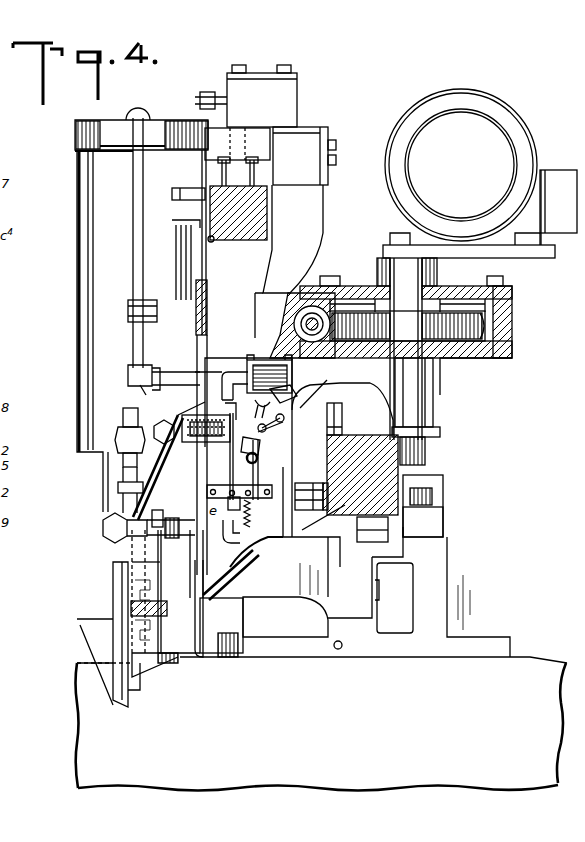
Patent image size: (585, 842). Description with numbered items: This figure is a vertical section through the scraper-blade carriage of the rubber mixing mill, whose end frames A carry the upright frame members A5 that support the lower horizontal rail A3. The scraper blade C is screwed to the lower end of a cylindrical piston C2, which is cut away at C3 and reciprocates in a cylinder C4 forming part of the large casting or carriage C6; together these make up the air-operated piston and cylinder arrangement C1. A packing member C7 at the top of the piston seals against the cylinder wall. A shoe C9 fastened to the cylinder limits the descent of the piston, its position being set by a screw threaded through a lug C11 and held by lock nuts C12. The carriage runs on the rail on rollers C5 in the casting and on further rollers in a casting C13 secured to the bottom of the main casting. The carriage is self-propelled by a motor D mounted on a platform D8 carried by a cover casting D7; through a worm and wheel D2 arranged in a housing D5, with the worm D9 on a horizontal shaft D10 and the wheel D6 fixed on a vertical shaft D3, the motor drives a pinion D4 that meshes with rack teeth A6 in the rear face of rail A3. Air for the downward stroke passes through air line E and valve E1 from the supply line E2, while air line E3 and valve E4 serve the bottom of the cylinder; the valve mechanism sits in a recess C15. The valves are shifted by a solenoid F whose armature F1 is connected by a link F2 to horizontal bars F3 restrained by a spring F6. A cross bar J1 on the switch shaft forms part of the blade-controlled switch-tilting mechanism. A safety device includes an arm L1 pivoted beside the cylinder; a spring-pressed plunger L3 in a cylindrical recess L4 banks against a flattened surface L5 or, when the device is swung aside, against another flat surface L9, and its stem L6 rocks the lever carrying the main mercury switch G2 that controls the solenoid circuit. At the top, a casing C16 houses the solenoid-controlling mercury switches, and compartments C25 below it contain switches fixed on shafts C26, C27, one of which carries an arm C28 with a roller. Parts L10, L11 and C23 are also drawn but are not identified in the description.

The cylinder C4 is at (78, 183).
The air-operated piston and cylinder arrangement C1 is at (66, 320).
The air line E is at (133, 222).
The casting C13 is at (174, 194).
The rotatable shaft C26 is at (190, 252).
The casing C16 is at (262, 73).
The rotatable shaft C27 is at (257, 153).
The arm C28 is at (264, 175).
The casings or compartments C25 is at (312, 125).
The worm D9 is at (312, 280).
The motor D is at (495, 108).
The platform D8 is at (541, 233).
The casting D7 is at (470, 276).
The wheel D6 is at (512, 298).
The worm and wheel D2 is at (506, 345).
The housing D5 is at (486, 326).
The horizontal shaft D10 is at (306, 318).
The vertical shaft D3 is at (410, 378).
The pinion D4 is at (413, 446).
The main switch G2 is at (310, 384).
The casting or carriage C6 is at (205, 315).
The solenoid F is at (270, 360).
The armature F1 is at (240, 336).
The arm L1 is at (288, 410).
The stem L6 is at (282, 432).
The air supply line E2 is at (260, 440).
The link F2 is at (270, 467).
The cross bar J1 is at (252, 463).
The flattened surface L5 is at (175, 440).
The packing member or washer C7 is at (338, 415).
The rollers C5 is at (310, 487).
The bars F3 is at (250, 513).
The spring F6 is at (262, 540).
The valve E4 is at (257, 550).
The air line E3 is at (238, 568).
The horizontal cross member or rail A3 is at (323, 582).
The flat surface L9 is at (140, 413).
The spring-pressed plunger L3 is at (152, 405).
The valve E1 is at (190, 412).
The cylindrical recess L4 is at (165, 448).
The pipe L10 is at (157, 497).
The nut L11 is at (170, 518).
The lock nuts C12 is at (108, 520).
The piston C2 is at (103, 478).
The shoe C9 is at (160, 633).
The recess C15 is at (220, 597).
The cut-away portion C3 is at (147, 677).
The scraper blade C is at (90, 634).
The pin C23 is at (341, 647).
The rack teeth A6 is at (433, 472).
The lug C11 is at (433, 500).
The upright frame members A5 is at (450, 620).
The end frames A is at (322, 724).